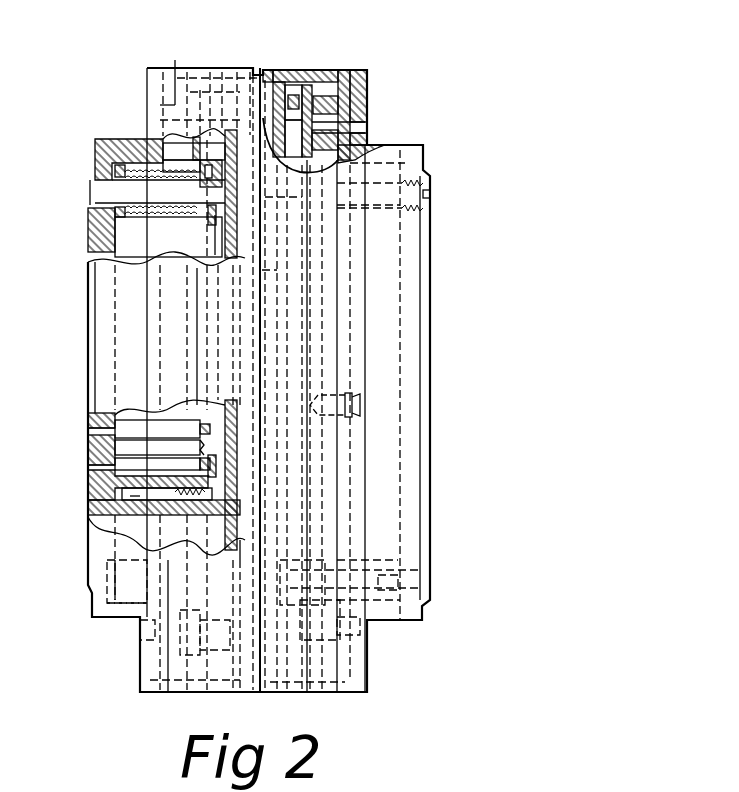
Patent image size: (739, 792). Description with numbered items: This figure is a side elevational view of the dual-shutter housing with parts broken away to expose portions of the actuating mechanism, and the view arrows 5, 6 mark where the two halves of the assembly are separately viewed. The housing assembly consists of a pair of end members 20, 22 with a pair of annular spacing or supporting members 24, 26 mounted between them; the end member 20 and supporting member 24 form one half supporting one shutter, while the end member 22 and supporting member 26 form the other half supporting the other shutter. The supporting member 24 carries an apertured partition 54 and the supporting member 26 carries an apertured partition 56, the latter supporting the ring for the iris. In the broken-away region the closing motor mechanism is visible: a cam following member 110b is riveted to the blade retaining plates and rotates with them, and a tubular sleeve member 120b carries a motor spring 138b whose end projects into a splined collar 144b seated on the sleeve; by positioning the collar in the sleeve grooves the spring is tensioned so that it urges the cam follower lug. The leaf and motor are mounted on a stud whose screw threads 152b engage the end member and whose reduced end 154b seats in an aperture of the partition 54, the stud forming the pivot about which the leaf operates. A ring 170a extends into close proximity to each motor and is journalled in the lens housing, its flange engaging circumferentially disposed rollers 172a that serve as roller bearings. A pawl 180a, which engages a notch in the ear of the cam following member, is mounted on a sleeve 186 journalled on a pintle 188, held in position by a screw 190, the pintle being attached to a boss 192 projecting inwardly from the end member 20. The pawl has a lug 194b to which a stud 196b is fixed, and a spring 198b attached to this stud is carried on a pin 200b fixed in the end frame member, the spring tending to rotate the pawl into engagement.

The section line 5- 5 is at (202, 8).
The section line 6- 6 is at (310, 42).
The end member 20 is at (134, 143).
The end member 22 is at (369, 86).
The cylindrical spacing or supporting member 24 is at (212, 72).
The cylindrical spacing or supporting member 26 is at (313, 84).
The apertured partition 54 is at (224, 238).
The apertured partition 56 is at (266, 70).
The cam following member 110b is at (194, 148).
The tubular sleeve member 120b is at (168, 171).
The motor spring 138b is at (168, 231).
The splined collar 144b is at (95, 211).
The screw threads 152b is at (108, 190).
The reduced end 154b is at (232, 190).
The ring 170a is at (320, 76).
The rollers 172a is at (366, 105).
The pawl 180a is at (180, 570).
The sleeve 186 is at (190, 545).
The pintle 188 is at (100, 507).
The screw 190 is at (232, 530).
The boss 192 is at (122, 515).
The lug 194b is at (215, 462).
The stud 196b is at (198, 468).
The spring 198b is at (198, 451).
The pin 200b is at (180, 430).